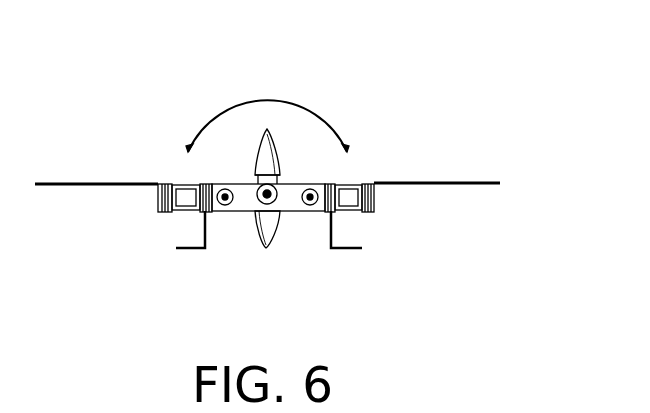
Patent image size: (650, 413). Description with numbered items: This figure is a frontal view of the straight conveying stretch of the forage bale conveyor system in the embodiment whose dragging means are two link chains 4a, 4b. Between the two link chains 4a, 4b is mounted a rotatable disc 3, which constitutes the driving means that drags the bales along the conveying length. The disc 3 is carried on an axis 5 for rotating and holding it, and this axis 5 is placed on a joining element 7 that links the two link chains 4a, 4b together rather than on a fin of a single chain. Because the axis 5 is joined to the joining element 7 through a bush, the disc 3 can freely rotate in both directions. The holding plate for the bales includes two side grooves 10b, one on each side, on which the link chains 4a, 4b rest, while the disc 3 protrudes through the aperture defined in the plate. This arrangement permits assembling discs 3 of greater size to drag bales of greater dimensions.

The rotatable disc 3 is at (260, 160).
The link chain 4a is at (180, 188).
The link chain 4b is at (357, 183).
The axis 5 is at (273, 207).
The joining element 7 is at (253, 205).
The side groove 10b is at (190, 212).